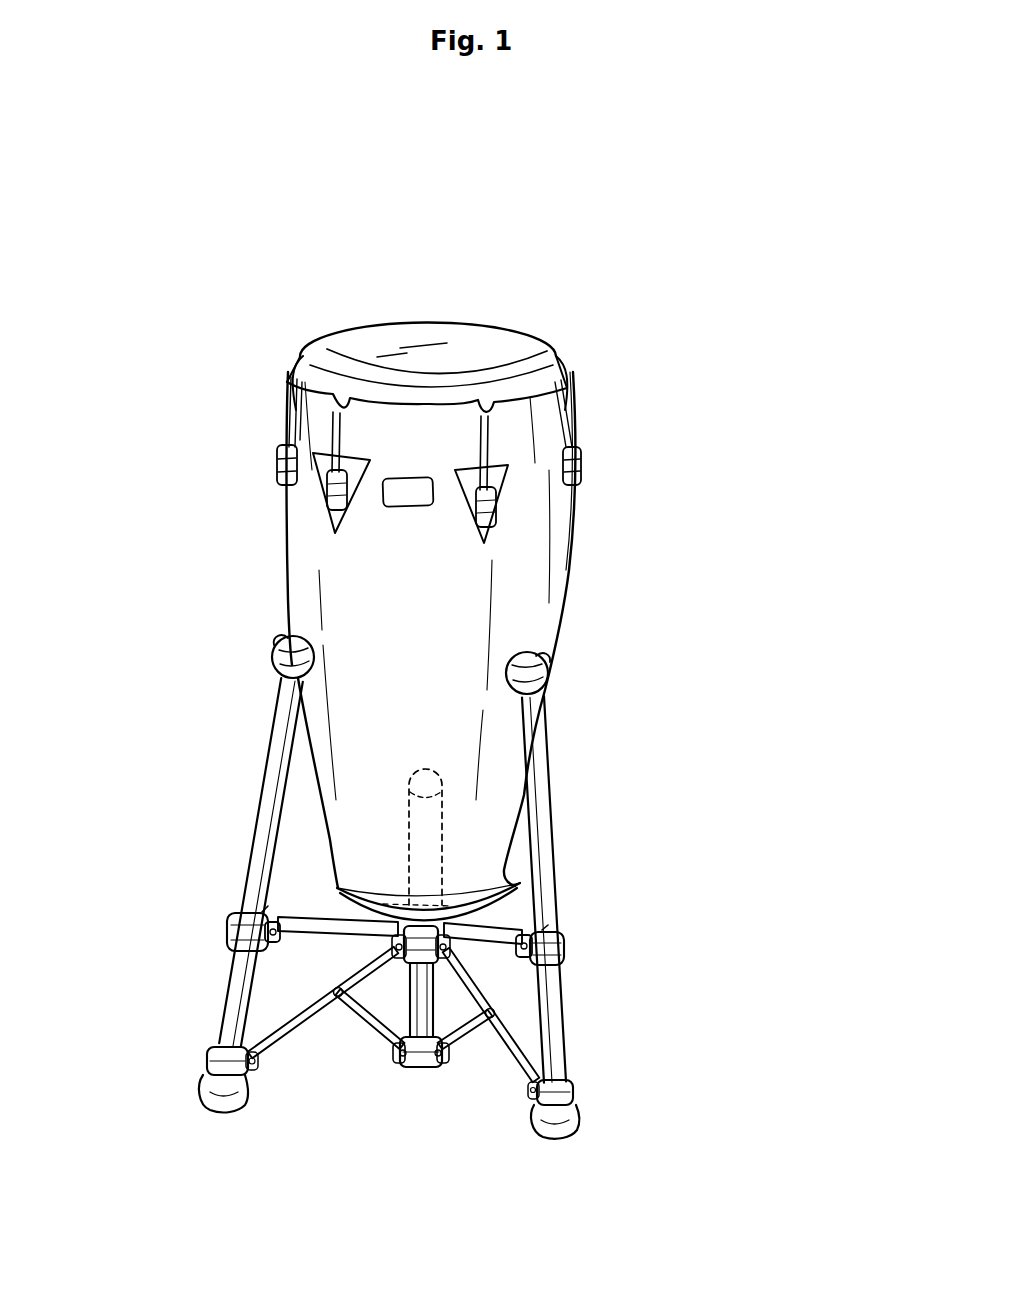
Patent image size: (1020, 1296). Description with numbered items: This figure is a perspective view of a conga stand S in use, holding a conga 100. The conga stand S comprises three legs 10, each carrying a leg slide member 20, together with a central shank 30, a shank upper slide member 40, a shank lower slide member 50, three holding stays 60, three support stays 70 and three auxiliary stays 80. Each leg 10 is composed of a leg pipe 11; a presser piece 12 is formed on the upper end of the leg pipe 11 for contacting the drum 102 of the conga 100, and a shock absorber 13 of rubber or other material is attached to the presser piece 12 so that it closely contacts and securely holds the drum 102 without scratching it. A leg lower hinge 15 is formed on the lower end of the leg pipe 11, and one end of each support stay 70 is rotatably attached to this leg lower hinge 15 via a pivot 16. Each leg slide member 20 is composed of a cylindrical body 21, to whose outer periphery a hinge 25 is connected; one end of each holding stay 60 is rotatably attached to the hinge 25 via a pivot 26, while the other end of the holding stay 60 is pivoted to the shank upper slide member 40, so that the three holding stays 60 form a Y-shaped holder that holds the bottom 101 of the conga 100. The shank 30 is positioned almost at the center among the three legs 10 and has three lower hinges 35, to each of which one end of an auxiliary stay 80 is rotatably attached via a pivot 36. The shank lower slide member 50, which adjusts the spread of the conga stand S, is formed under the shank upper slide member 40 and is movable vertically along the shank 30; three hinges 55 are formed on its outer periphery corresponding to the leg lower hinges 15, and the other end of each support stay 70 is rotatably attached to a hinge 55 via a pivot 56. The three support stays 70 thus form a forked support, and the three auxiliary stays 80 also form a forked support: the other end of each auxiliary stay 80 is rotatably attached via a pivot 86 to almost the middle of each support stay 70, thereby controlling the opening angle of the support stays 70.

The conga 100 is at (584, 492).
The bottom 101 is at (553, 928).
The drum 102 is at (565, 572).
The leg 10 is at (411, 879).
The leg pipe 11 is at (268, 752).
The presser piece 12 is at (280, 645).
The shock absorber 13 is at (290, 638).
The leg lower hinge 15 is at (207, 1060).
The pivot 16 is at (260, 1078).
The leg slide member 20 is at (395, 951).
The cylindrical body 21 is at (235, 943).
The hinge 25 is at (271, 946).
The pivot 26 is at (254, 903).
The shank 30 is at (397, 1032).
The lower hinge 35 is at (419, 1100).
The pivot 36 is at (441, 1066).
The shank upper slide member 40 is at (478, 893).
The shank lower slide member 50 is at (529, 972).
The hinge 55 is at (392, 908).
The pivot 56 is at (455, 938).
The holding stay 60 is at (315, 917).
The support stay 70 is at (310, 1013).
The auxiliary stay 80 is at (395, 1028).
The pivot 86 is at (414, 1010).
The conga stand S is at (592, 862).